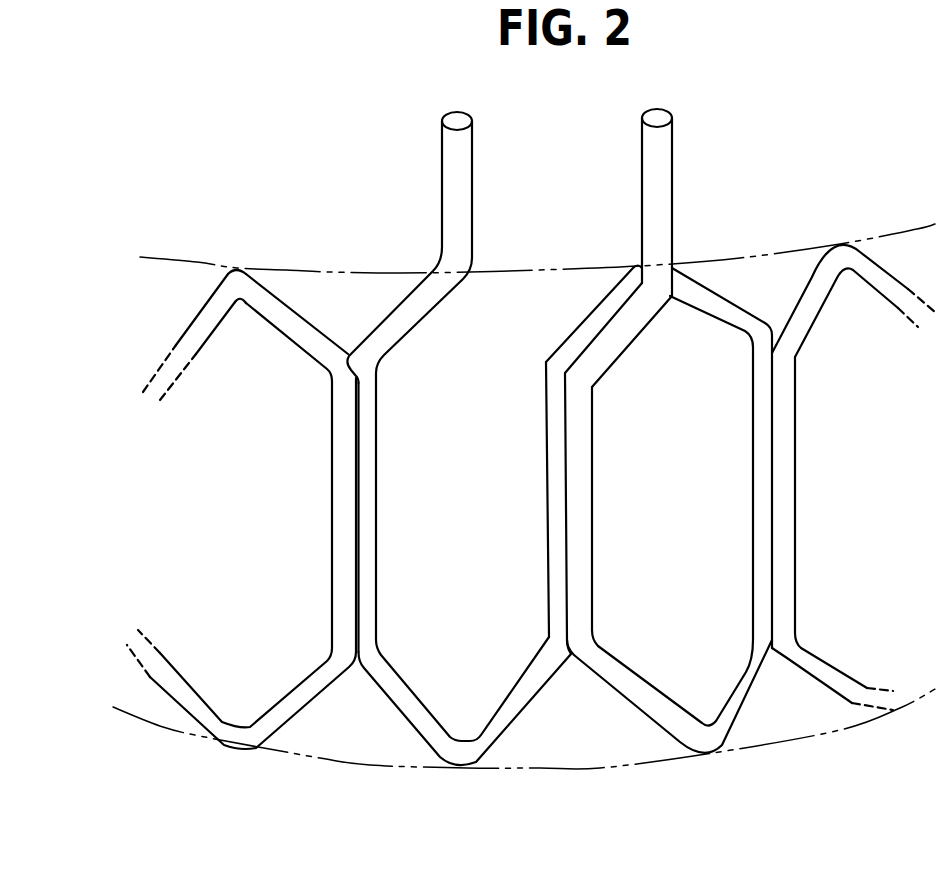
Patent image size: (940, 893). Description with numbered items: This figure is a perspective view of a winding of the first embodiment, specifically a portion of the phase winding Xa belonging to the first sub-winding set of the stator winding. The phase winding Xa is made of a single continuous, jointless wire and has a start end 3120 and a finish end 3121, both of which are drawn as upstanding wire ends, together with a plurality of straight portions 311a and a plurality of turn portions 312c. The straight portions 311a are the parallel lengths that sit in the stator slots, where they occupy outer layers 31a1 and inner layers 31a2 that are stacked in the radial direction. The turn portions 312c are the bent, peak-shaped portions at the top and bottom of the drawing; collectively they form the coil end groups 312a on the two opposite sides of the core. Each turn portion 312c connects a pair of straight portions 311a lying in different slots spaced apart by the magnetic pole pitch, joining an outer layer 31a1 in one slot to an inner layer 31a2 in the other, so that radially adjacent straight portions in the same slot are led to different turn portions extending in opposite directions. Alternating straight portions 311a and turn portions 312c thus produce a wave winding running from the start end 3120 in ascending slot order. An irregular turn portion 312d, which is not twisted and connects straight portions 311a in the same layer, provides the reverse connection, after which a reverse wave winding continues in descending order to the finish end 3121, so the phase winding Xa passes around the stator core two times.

The finish end 3121 is at (456, 121).
The start end 3120 is at (657, 118).
The phase winding Xa is at (801, 109).
The turn portion 312c is at (237, 283).
The coil end group 312a is at (318, 297).
The irregular turn portion 312d is at (635, 277).
The straight portion 311a is at (314, 523).
The outer layer 31a1 is at (582, 511).
The inner layer 31a2 is at (366, 552).